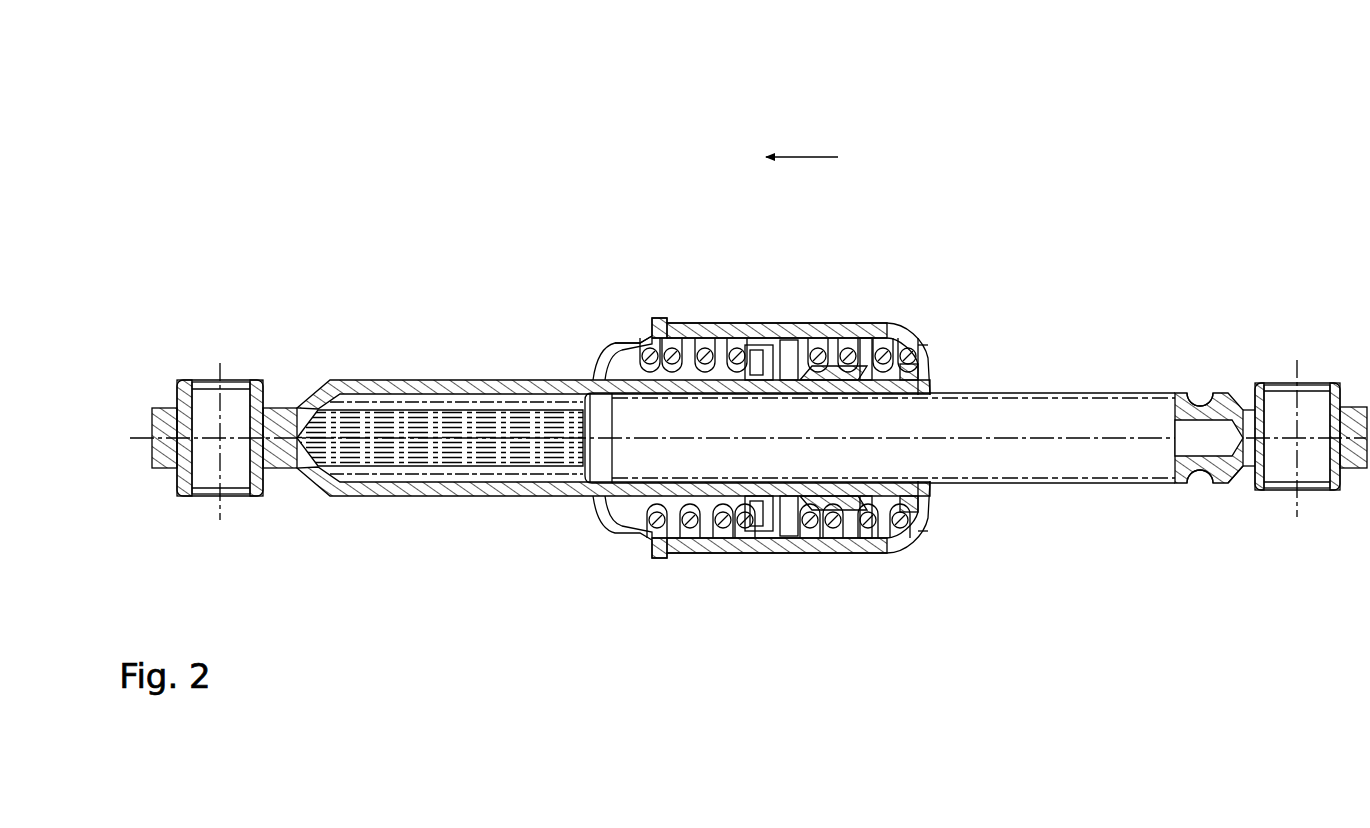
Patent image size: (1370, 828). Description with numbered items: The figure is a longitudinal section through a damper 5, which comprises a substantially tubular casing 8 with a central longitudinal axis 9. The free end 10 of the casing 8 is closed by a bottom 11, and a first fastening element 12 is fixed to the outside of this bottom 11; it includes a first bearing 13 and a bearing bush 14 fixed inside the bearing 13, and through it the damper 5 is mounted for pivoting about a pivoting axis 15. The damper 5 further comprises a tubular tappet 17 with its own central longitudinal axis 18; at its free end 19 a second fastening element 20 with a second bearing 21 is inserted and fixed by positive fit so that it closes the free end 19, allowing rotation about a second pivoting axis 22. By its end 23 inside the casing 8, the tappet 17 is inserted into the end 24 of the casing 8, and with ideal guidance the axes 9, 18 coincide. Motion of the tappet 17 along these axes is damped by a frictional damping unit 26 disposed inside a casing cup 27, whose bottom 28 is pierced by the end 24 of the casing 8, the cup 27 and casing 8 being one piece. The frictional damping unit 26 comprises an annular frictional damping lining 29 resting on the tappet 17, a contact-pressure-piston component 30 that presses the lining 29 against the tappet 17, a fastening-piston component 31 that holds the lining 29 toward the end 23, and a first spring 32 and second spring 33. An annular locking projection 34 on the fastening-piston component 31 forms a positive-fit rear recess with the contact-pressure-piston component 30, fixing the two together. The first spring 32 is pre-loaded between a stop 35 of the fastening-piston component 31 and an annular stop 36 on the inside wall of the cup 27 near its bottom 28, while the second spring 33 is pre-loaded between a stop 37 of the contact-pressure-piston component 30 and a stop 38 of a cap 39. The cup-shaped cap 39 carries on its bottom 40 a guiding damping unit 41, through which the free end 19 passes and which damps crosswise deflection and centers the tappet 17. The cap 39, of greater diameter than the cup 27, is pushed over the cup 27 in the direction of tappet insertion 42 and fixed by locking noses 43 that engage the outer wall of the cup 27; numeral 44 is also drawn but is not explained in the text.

The damper 5 is at (401, 366).
The tubular casing 8 is at (505, 388).
The central longitudinal axis 9 is at (133, 440).
The free end 10 is at (350, 380).
The bottom 11 is at (308, 398).
The first fastening element 12 is at (171, 380).
The first bearing 13 is at (263, 490).
The bearing bush 14 is at (243, 497).
The pivoting axis 15 is at (234, 394).
The tappet 17 is at (1056, 392).
The central longitudinal axis 18 is at (1027, 437).
The free end 19 is at (1177, 392).
The second fastening element 20 is at (1226, 492).
The second bearing 21 is at (1262, 385).
The second pivoting axis 22 is at (1297, 362).
The end inside the casing 23 is at (600, 492).
The end on the side of the tappet 24 is at (690, 350).
The frictional damping unit 26 is at (822, 345).
The casing cup 27 is at (633, 342).
The bottom 28 is at (598, 362).
The annular frictional damping lining 29 is at (847, 512).
The contact-pressure-piston component 30 is at (872, 538).
The fastening-piston component 31 is at (785, 350).
The first spring 32 is at (690, 536).
The second spring 33 is at (905, 542).
The annular locking projection 34 is at (770, 522).
The stop 35 is at (745, 355).
The annular stop 36 is at (637, 540).
The stop 37 is at (800, 522).
The stop 38 is at (906, 513).
The cap 39 is at (870, 322).
The bottom 40 is at (930, 510).
The guiding damping unit 41 is at (937, 345).
The direction of tappet insertion 42 is at (800, 157).
The locking noses 43 is at (658, 336).
The snap ring 44 is at (897, 316).